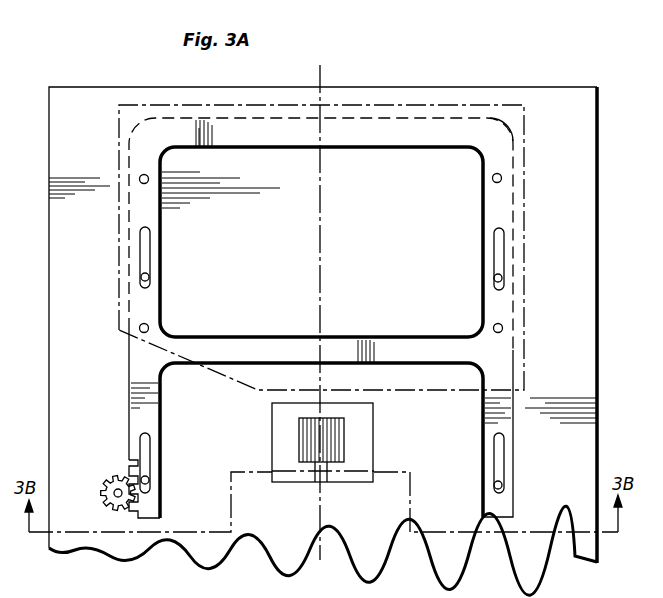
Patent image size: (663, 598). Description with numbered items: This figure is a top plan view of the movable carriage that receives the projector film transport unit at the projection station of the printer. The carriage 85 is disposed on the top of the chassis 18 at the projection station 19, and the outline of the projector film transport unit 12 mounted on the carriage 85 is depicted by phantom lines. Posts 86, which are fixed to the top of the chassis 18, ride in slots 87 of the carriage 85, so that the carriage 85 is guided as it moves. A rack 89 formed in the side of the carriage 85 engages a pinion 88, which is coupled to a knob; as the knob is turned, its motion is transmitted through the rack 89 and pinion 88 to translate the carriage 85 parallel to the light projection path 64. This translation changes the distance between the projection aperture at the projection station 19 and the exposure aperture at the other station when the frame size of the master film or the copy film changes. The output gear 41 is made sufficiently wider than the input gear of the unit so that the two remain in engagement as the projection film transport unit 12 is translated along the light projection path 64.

The chassis 18 is at (627, 83).
The light projection path 64 is at (322, 72).
The projection station 19 is at (92, 326).
The projector film transport unit 12 is at (512, 358).
The carriage 85 is at (505, 132).
The slots 87 is at (152, 232).
The posts 86 is at (150, 276).
The rack 89 is at (128, 465).
The pinion 88 is at (103, 494).
The output gear 41 is at (345, 441).